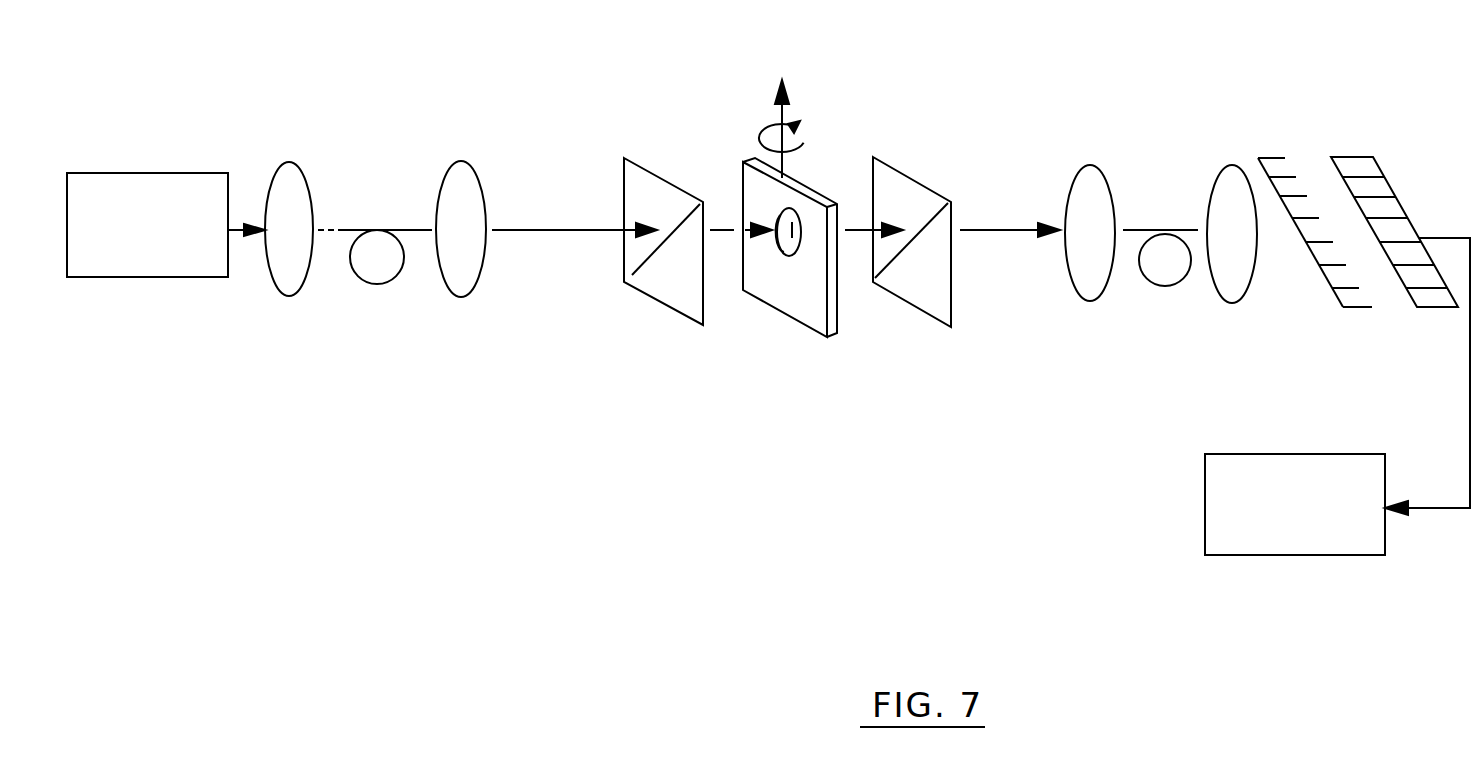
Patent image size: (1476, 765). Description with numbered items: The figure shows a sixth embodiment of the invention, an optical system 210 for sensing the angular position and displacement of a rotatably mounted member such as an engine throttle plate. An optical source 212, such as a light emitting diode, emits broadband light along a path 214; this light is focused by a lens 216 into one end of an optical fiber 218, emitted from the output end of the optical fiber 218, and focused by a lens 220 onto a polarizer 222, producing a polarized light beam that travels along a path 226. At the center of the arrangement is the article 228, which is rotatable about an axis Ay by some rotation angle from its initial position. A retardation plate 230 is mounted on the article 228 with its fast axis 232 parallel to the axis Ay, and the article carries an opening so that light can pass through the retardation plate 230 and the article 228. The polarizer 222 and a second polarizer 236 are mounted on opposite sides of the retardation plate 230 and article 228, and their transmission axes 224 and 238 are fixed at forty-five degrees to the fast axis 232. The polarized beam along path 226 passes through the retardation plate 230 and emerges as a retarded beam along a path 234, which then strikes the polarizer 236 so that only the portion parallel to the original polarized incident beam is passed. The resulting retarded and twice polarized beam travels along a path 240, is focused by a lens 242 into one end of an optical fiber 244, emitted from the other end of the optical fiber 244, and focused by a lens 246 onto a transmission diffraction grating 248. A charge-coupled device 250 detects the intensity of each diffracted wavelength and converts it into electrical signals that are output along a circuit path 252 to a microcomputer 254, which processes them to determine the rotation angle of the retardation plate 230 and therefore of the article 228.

The system 210 is at (985, 528).
The optical source 212 is at (158, 277).
The path 214 is at (236, 232).
The lens 216 is at (300, 157).
The optical fiber 218 is at (347, 230).
The lens 220 is at (465, 296).
The polarizer 222 is at (624, 210).
The transmission axis 224 is at (653, 255).
The path 226 is at (718, 230).
The article 228 is at (817, 332).
The retardation plate 230 is at (788, 256).
The fast axis 232 is at (783, 254).
The path 234 is at (858, 230).
The polarizer 236 is at (918, 182).
The transmission axis 238 is at (902, 250).
The path 240 is at (994, 230).
The lens 242 is at (1090, 165).
The optical fiber 244 is at (1163, 273).
The lens 246 is at (1232, 165).
The transmission diffraction grating 248 is at (1323, 272).
The charge-coupled device 250 is at (1400, 202).
The circuit path 252 is at (1470, 348).
The microcomputer 254 is at (1282, 555).